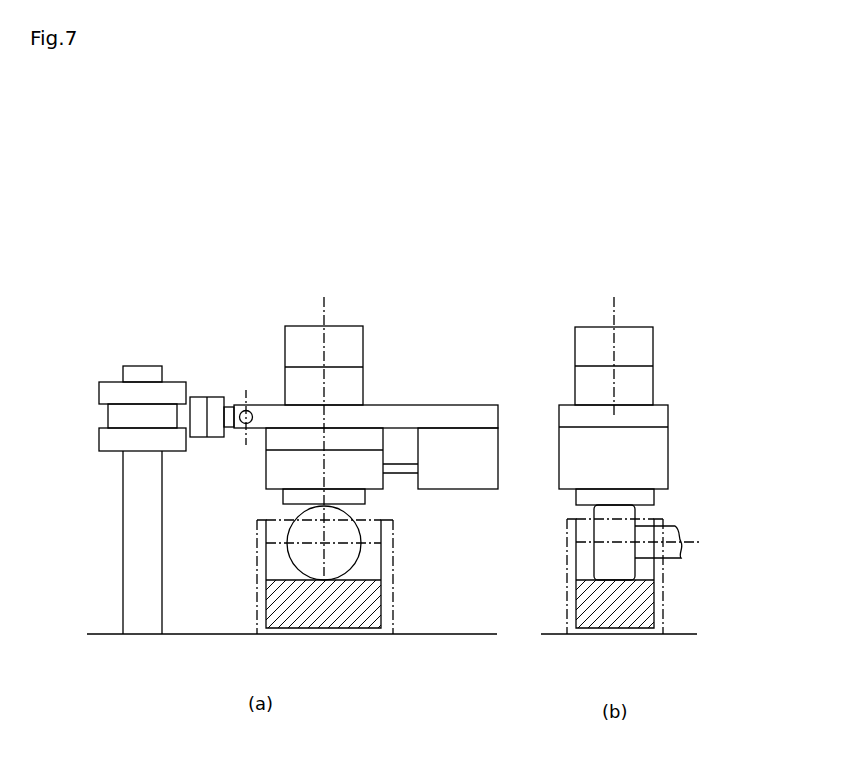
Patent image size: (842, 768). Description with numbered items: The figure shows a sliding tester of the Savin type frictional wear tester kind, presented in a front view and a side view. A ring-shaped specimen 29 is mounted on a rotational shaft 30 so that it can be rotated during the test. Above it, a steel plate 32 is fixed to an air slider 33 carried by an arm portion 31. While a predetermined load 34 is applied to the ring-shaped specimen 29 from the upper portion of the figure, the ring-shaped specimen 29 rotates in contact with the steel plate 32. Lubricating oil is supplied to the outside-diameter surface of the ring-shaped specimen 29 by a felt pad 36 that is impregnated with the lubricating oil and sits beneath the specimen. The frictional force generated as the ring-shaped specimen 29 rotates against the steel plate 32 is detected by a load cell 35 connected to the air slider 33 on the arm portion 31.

The ring-shaped specimen 29 is at (618, 558).
The rotational shaft 30 is at (672, 535).
The arm portion 31 is at (653, 450).
The steel plate 32 is at (642, 497).
The air slider 33 is at (360, 457).
The load 34 is at (297, 337).
The load cell 35 is at (453, 440).
The felt pad 36 is at (617, 610).